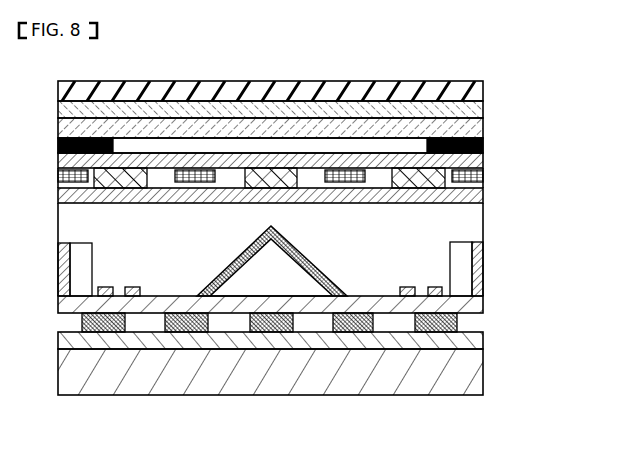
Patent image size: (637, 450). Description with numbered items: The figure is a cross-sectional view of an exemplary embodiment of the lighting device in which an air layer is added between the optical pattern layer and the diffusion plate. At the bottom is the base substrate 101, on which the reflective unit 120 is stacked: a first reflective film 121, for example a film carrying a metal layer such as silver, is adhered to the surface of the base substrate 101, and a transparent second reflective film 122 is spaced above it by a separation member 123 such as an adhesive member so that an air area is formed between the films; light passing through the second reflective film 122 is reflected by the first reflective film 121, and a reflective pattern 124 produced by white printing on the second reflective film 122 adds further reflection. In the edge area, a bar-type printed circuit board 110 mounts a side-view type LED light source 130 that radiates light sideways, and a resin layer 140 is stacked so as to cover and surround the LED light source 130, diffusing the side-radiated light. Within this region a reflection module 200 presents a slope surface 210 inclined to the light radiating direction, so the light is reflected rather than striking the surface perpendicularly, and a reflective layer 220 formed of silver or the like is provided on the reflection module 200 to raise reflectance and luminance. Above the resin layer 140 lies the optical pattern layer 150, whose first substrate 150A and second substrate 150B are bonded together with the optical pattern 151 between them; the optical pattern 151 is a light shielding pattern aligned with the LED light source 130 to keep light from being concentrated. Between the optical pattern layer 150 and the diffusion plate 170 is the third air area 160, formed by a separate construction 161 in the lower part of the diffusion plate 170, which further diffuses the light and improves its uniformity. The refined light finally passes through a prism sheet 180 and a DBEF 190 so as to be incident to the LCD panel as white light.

The base substrate 101 is at (478, 362).
The printed circuit board 110 is at (485, 260).
The reflective unit 120 is at (319, 318).
The first reflective film 121 is at (483, 340).
The second reflective film 122 is at (475, 304).
The separation member 123 is at (458, 321).
The reflective pattern 124 is at (442, 288).
The LED light source 130 is at (462, 251).
The resin layer 140 is at (467, 218).
The optical pattern layer 150 is at (302, 126).
The first substrate 150A is at (483, 162).
The second substrate 150B is at (483, 194).
The optical pattern 151 is at (58, 176).
The third air area 160 is at (376, 147).
The separate construction 161 is at (483, 146).
The diffusion plate 170 is at (483, 128).
The prism sheet 180 is at (483, 110).
The DBEF 190 is at (478, 88).
The reflection module 200 is at (277, 281).
The slope surface 210 is at (253, 297).
The reflective layer 220 is at (250, 292).